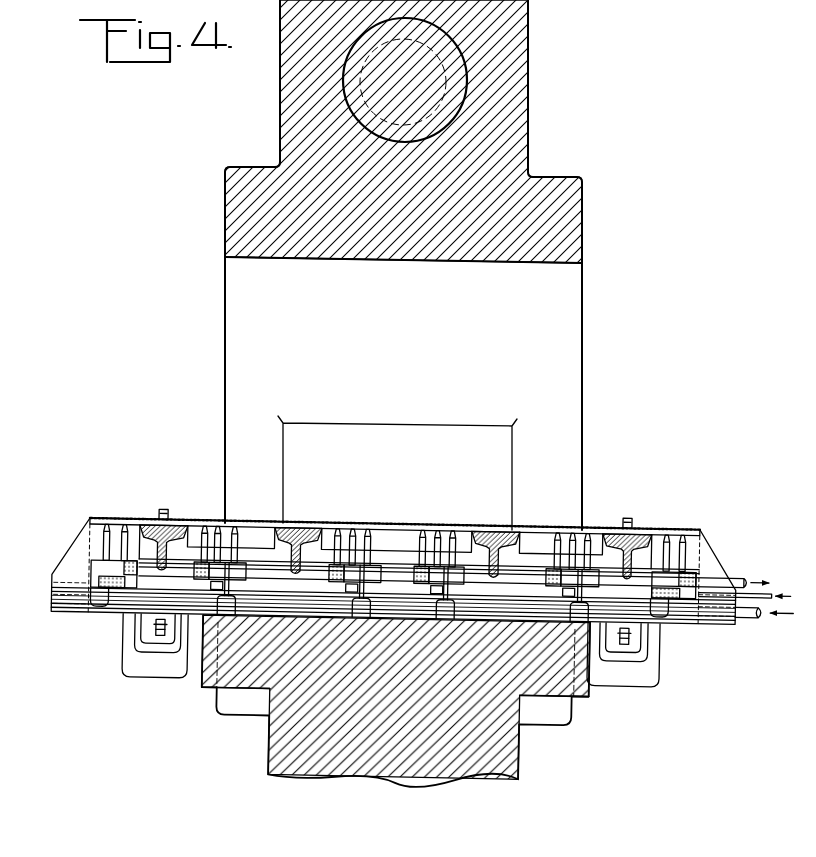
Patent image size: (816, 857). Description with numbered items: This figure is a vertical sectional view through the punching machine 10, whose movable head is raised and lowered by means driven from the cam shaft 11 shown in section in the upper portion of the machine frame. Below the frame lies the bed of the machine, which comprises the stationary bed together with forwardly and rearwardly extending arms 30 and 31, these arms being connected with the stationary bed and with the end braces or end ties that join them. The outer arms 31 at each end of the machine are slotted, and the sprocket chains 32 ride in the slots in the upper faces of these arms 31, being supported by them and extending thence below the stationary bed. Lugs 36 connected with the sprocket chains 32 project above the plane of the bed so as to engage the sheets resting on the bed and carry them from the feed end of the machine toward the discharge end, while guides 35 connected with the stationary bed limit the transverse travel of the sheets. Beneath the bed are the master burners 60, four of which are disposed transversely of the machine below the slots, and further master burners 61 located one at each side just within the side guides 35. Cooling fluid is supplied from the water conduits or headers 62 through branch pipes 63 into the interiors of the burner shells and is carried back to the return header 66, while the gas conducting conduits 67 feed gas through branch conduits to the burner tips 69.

The punching machine 10 is at (523, 749).
The cam shaft 11 is at (452, 82).
The forwardly and rearwardly extending arm 30 is at (286, 522).
The outer arm 31 is at (148, 520).
The sprocket chain 32 is at (176, 521).
The guide 35 is at (58, 572).
The lug 36 is at (164, 514).
The master burner 60 is at (235, 560).
The master burner 61 is at (100, 569).
The water conduit or header 62 is at (128, 597).
The branch pipe 63 is at (77, 590).
The return header 66 is at (256, 566).
The gas conducting conduit 67 is at (303, 580).
The burner tip 69 is at (122, 534).